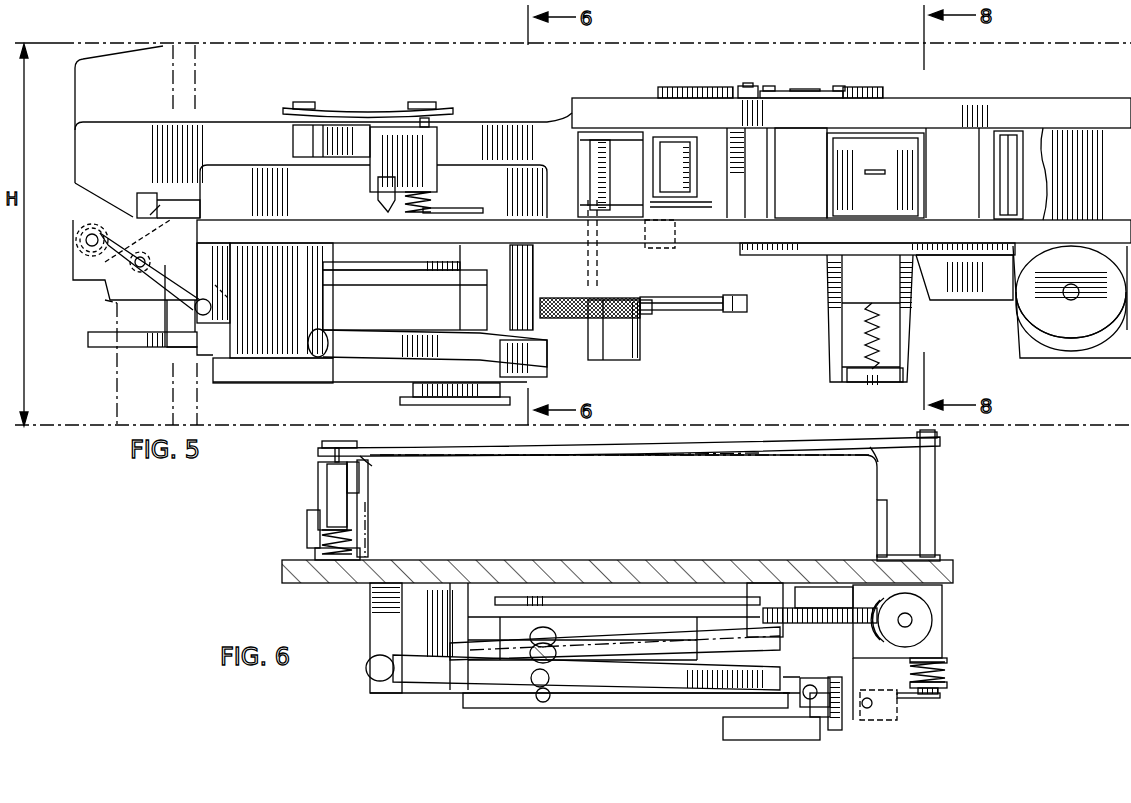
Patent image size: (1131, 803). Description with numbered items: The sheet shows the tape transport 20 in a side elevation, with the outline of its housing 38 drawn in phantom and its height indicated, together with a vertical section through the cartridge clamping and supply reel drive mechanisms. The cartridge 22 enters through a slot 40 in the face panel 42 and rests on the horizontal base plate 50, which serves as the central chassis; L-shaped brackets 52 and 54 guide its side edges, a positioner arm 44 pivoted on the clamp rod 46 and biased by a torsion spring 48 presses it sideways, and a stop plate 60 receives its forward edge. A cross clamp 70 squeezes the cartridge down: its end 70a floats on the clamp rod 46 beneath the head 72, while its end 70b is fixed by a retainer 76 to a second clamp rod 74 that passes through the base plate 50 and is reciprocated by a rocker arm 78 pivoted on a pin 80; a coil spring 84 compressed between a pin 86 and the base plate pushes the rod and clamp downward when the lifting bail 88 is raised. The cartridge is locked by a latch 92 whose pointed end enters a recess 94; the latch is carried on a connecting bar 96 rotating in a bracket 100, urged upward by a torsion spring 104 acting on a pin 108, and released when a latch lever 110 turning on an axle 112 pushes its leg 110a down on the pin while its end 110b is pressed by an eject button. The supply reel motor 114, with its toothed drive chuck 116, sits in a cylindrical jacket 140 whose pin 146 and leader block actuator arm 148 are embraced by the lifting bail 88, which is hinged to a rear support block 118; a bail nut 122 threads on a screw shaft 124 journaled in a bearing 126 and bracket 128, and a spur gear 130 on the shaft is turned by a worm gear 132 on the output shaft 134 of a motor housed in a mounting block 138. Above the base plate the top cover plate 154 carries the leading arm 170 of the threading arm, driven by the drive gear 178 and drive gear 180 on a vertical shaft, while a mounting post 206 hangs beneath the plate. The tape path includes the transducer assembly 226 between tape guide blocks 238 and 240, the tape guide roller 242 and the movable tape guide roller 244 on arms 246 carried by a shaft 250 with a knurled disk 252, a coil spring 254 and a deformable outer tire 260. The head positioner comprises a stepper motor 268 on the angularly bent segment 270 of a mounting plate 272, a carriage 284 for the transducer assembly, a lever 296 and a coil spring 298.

In FIG. 5, the tape transport 20 is at (745, 58).
In FIG. 5, the cartridge 22 is at (145, 128).
In FIG. 6, the cartridge 22 is at (885, 484).
In FIG. 5, the housing 38 is at (372, 43).
In FIG. 5, the slot 40 is at (85, 208).
In FIG. 5, the face panel 42 is at (160, 44).
In FIG. 5, the positioner arm 44 is at (337, 158).
In FIG. 6, the positioner arm 44 is at (327, 480).
In FIG. 5, the clamp rod 46 is at (438, 124).
In FIG. 6, the clamp rod 46 is at (318, 462).
In FIG. 5, the torsion spring 48 is at (432, 203).
In FIG. 6, the torsion spring 48 is at (310, 542).
In FIG. 5, the base plate 50 is at (1060, 225).
In FIG. 6, the base plate 50 is at (683, 570).
In FIG. 5, the L-shaped bracket 52 is at (233, 166).
In FIG. 6, the L-shaped bracket 52 is at (368, 518).
In FIG. 6, the L-shaped bracket 54 is at (888, 512).
In FIG. 5, the stop plate 60 is at (658, 214).
In FIG. 5, the cross clamp 70 is at (352, 108).
In FIG. 6, the cross clamp 70 is at (610, 449).
In FIG. 6, the cross clamp end 70a is at (372, 455).
In FIG. 6, the cross clamp end 70b is at (870, 450).
In FIG. 5, the head 72 is at (424, 102).
In FIG. 6, the head 72 is at (322, 445).
In FIG. 6, the second clamp rod 74 is at (935, 498).
In FIG. 5, the retainer 76 is at (308, 102).
In FIG. 6, the retainer 76 is at (940, 440).
In FIG. 6, the rocker arm 78 is at (910, 700).
In FIG. 6, the pin 80 is at (875, 705).
In FIG. 6, the coil spring 84 is at (947, 670).
In FIG. 6, the pin 86 is at (940, 686).
In FIG. 5, the lifting bail 88 is at (383, 338).
In FIG. 6, the lifting bail 88 is at (617, 642).
In FIG. 5, the latch 92 is at (155, 209).
In FIG. 5, the recess 94 is at (145, 193).
In FIG. 5, the connecting bar 96 is at (80, 236).
In FIG. 5, the bracket 100 is at (222, 288).
In FIG. 5, the torsion spring 104 is at (78, 268).
In FIG. 5, the pin 108 is at (150, 261).
In FIG. 5, the latch lever 110 is at (155, 348).
In FIG. 5, the latch lever leg 110a is at (112, 272).
In FIG. 5, the latch lever end 110b is at (93, 345).
In FIG. 5, the axle 112 is at (207, 318).
In FIG. 5, the supply reel motor 114 is at (368, 279).
In FIG. 6, the supply reel motor 114 is at (633, 614).
In FIG. 5, the drive chuck 116 is at (390, 266).
In FIG. 6, the drive chuck 116 is at (582, 597).
In FIG. 5, the rear support block 118 is at (300, 348).
In FIG. 6, the rear support block 118 is at (372, 609).
In FIG. 6, the bail nut 122 is at (865, 714).
In FIG. 6, the screw shaft 124 is at (840, 724).
In FIG. 6, the bearing 126 is at (818, 597).
In FIG. 6, the bracket 128 is at (725, 731).
In FIG. 6, the spur gear 130 is at (858, 610).
In FIG. 6, the worm gear 132 is at (920, 606).
In FIG. 6, the output shaft 134 is at (913, 620).
In FIG. 6, the mounting block 138 is at (935, 644).
In FIG. 5, the cylindrical jacket 140 is at (428, 327).
In FIG. 6, the cylindrical jacket 140 is at (465, 705).
In FIG. 5, the pin 146 is at (545, 370).
In FIG. 6, the pin 146 is at (540, 702).
In FIG. 5, the leader block actuator arm 148 is at (548, 320).
In FIG. 6, the leader block actuator arm 148 is at (558, 651).
In FIG. 5, the top cover plate 154 is at (982, 100).
In FIG. 5, the leading arm 170 is at (808, 90).
In FIG. 5, the drive gear 178 is at (870, 88).
In FIG. 5, the drive gear 180 is at (660, 88).
In FIG. 5, the mounting post 206 is at (640, 342).
In FIG. 5, the transducer assembly 226 is at (898, 146).
In FIG. 5, the tape guide block 238 is at (775, 207).
In FIG. 5, the tape guide block 240 is at (968, 207).
In FIG. 5, the tape guide roller 242 is at (1025, 132).
In FIG. 5, the movable tape guide roller 244 is at (700, 165).
In FIG. 5, the arms 246 is at (643, 136).
In FIG. 5, the shaft 250 is at (600, 254).
In FIG. 5, the knurled disk 252 is at (646, 312).
In FIG. 5, the coil spring 254 is at (605, 322).
In FIG. 5, the deformable outer tire 260 is at (680, 305).
In FIG. 5, the stepper motor 268 is at (1068, 338).
In FIG. 5, the angularly bent segment 270 is at (1105, 358).
In FIG. 5, the mounting plate 272 is at (768, 257).
In FIG. 5, the carriage 284 is at (828, 325).
In FIG. 5, the lever 296 is at (862, 382).
In FIG. 5, the coil spring 298 is at (883, 347).